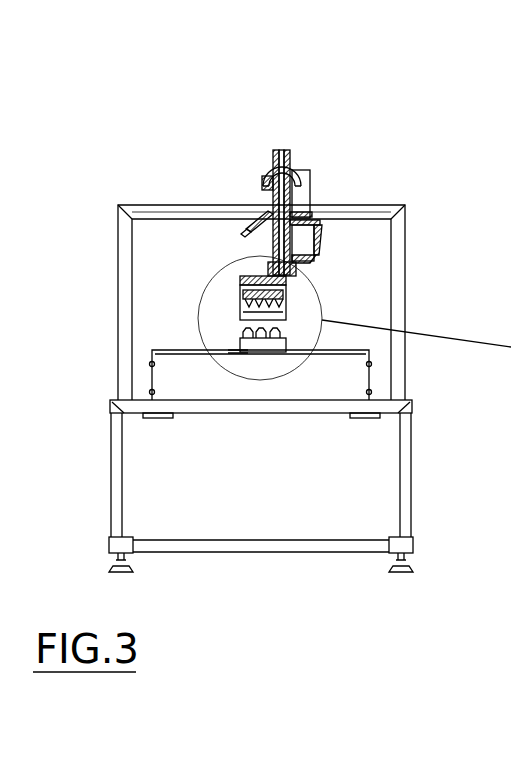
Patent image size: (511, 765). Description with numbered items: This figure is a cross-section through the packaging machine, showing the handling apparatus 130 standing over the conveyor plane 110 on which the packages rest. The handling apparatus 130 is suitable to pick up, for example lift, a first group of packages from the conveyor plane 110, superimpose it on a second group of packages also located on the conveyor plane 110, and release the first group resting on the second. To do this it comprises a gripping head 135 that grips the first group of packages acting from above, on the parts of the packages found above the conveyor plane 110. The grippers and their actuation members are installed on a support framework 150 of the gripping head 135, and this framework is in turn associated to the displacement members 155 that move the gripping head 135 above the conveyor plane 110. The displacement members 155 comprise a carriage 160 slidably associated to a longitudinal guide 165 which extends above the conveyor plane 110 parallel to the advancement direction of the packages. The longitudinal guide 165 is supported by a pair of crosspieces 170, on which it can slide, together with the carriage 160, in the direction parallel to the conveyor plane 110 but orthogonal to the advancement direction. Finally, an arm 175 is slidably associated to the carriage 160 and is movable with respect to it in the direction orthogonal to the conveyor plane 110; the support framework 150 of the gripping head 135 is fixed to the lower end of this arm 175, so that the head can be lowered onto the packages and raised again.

The conveyor plane 110 is at (323, 360).
The handling apparatus 130 is at (226, 153).
The gripping head 135 is at (228, 282).
The support framework 150 is at (252, 276).
The displacement members 155 is at (331, 162).
The carriage 160 is at (258, 210).
The longitudinal guide 165 is at (318, 245).
The crosspieces 170 is at (350, 212).
The arm 175 is at (266, 148).